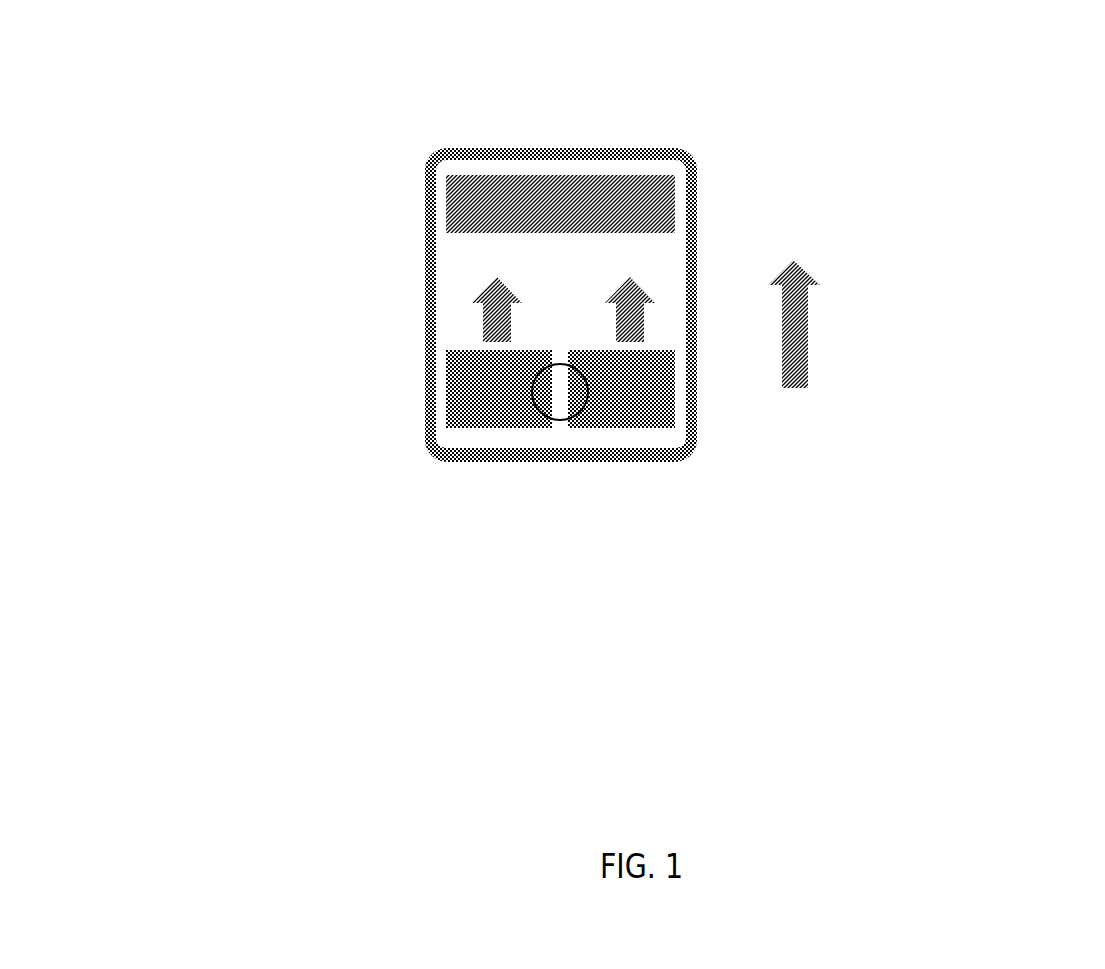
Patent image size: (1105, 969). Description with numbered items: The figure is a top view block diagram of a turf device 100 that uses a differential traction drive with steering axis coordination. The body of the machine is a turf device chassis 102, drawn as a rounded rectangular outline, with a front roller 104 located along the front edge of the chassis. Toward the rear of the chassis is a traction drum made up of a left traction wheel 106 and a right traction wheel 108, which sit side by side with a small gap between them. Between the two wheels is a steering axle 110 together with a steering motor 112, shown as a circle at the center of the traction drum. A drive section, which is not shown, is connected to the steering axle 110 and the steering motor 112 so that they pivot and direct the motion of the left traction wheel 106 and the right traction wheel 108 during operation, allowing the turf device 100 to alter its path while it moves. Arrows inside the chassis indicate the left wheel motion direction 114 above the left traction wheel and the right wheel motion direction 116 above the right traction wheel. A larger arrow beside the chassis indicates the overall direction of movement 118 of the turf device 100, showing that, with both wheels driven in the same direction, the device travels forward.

The turf device 100 is at (912, 266).
The turf device chassis 102 is at (704, 162).
The front roller 104 is at (528, 164).
The left traction wheel 106 is at (488, 436).
The right traction wheel 108 is at (634, 436).
The steering axle 110 is at (560, 434).
The steering motor 112 is at (570, 578).
The left wheel motion direction 114 is at (453, 312).
The right wheel motion direction 116 is at (596, 275).
The direction of movement 118 is at (820, 364).